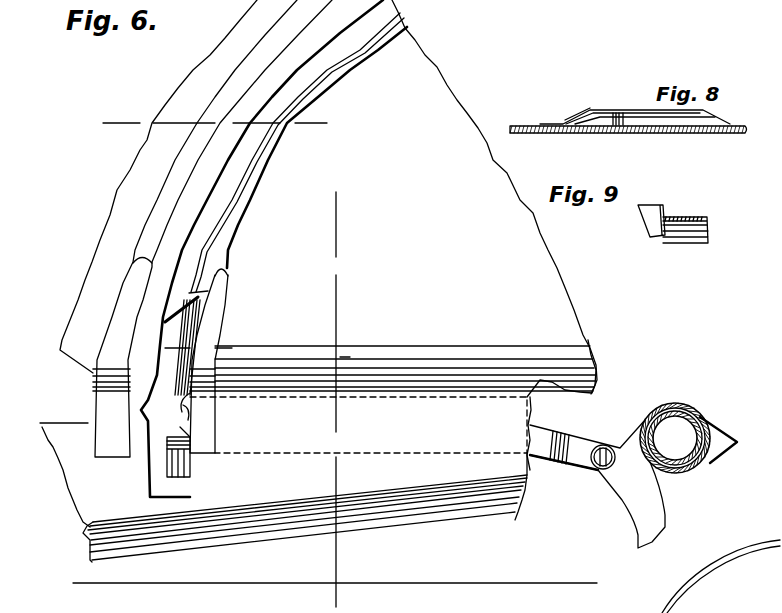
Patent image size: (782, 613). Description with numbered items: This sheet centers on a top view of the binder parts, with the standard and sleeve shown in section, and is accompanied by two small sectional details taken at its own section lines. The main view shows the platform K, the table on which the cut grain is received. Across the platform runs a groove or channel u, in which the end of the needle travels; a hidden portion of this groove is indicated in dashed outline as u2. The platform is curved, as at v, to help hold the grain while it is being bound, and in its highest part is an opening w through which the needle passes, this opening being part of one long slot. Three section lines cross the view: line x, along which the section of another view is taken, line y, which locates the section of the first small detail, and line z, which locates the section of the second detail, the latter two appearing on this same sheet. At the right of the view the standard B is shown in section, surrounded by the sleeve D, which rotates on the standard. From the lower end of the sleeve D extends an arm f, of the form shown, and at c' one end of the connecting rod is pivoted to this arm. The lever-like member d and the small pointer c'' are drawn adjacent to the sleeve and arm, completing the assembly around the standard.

In FIG. 6, the platform K is at (318, 263).
In FIG. 8, the platform K is at (628, 139).
In FIG. 6, the groove u is at (212, 228).
In FIG. 8, the groove u is at (619, 113).
In FIG. 6, the hidden part (dashed) u2 is at (358, 425).
In FIG. 6, the section line y is at (203, 125).
In FIG. 6, the section line x is at (335, 393).
In FIG. 6, the section line z is at (199, 361).
In FIG. 6, the curved part v is at (405, 367).
In FIG. 6, the opening w is at (171, 457).
In FIG. 6, the lever arm d is at (586, 433).
In FIG. 6, the pivot c' is at (603, 447).
In FIG. 6, the standard B is at (675, 438).
In FIG. 6, the sleeve D is at (688, 395).
In FIG. 6, the pointer c'' is at (719, 439).
In FIG. 6, the arm f is at (631, 505).